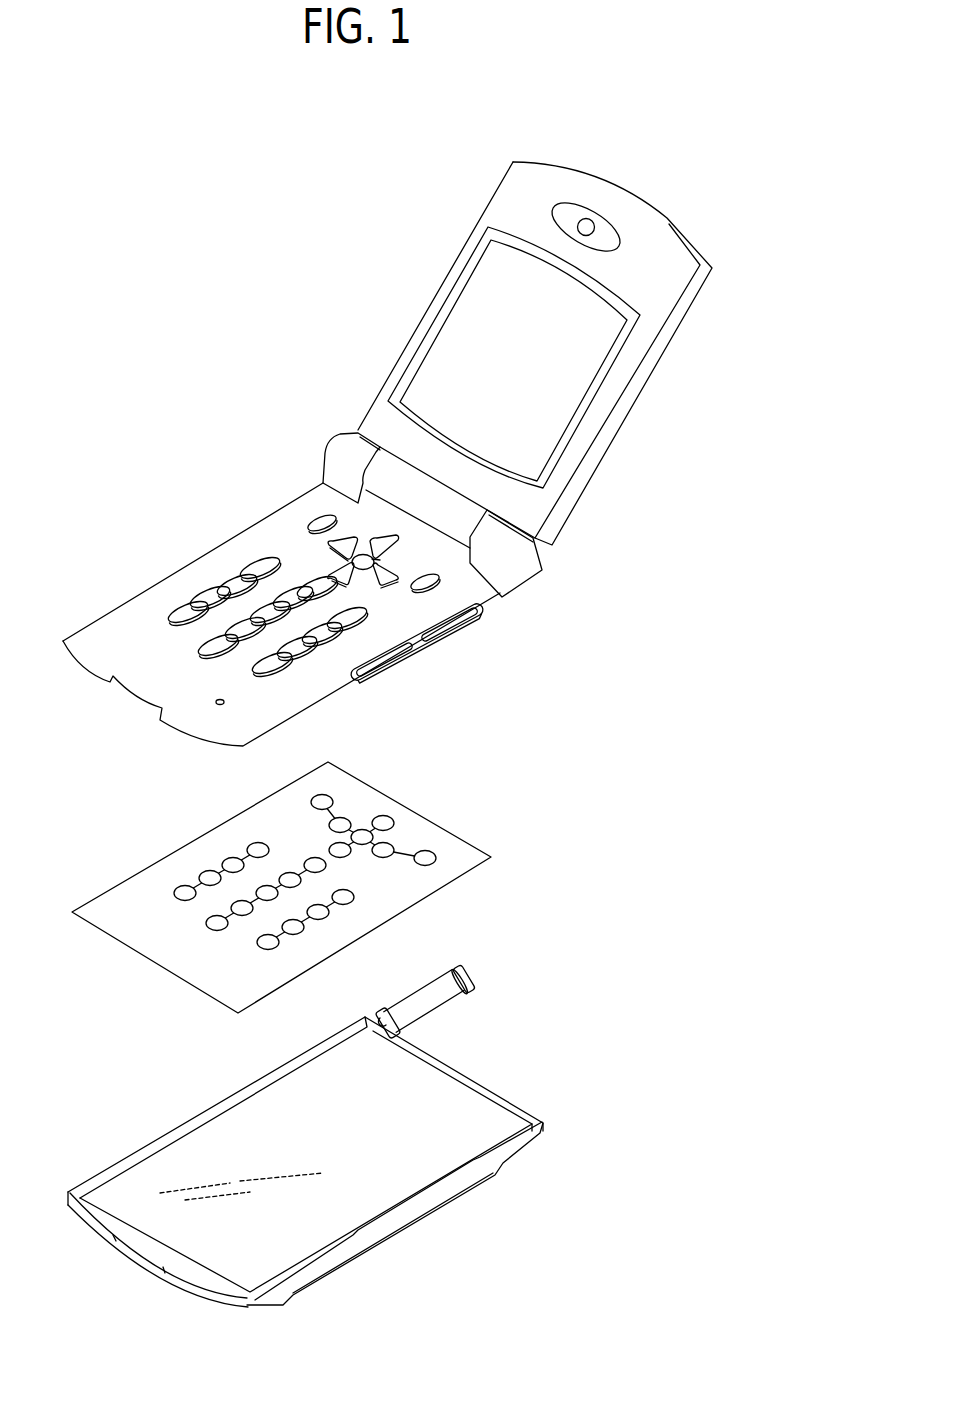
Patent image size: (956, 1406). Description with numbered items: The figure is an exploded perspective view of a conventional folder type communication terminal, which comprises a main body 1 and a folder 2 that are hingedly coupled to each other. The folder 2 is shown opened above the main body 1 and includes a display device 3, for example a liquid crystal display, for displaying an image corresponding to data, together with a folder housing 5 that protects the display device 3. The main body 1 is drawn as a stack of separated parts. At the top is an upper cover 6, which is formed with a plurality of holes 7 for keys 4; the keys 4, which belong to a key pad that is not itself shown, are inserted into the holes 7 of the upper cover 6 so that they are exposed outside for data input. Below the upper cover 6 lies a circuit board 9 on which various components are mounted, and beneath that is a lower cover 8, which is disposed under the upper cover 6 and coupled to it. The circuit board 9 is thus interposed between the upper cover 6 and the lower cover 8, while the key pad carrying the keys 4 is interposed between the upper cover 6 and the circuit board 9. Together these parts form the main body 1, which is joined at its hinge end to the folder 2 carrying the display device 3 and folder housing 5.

The main body 1 is at (285, 505).
The folder 2 is at (391, 371).
The display device 3 is at (563, 398).
The keys 4 is at (207, 597).
The folder housing 5 is at (507, 202).
The upper cover 6 is at (155, 682).
The holes 7 is at (170, 622).
The lower cover 8 is at (503, 1165).
The circuit board 9 is at (128, 897).